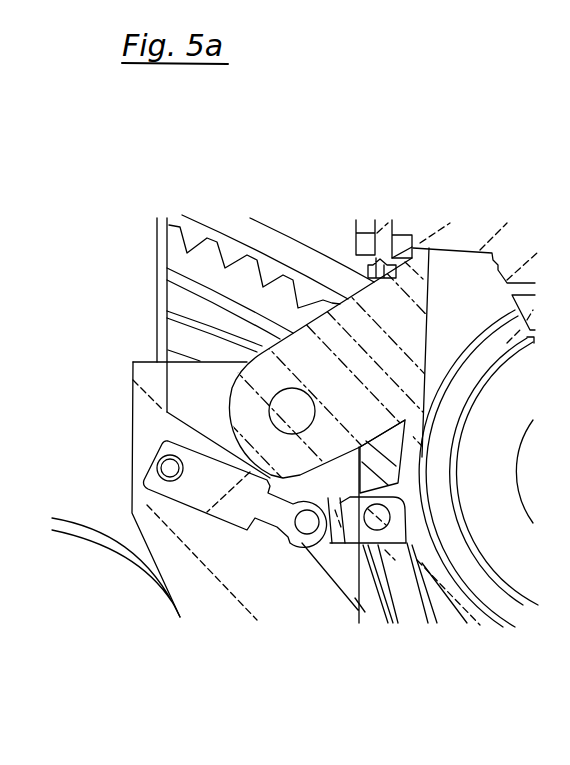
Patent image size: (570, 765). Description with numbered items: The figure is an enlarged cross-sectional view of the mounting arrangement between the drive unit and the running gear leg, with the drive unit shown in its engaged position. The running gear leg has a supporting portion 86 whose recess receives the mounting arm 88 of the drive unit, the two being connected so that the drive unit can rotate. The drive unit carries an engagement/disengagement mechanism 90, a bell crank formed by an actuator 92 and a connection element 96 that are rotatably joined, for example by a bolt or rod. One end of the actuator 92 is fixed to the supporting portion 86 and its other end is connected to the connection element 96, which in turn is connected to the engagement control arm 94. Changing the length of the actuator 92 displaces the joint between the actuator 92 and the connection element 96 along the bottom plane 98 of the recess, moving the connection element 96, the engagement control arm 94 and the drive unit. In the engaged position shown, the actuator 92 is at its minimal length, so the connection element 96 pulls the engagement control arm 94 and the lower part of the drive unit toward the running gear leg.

The supporting portion 86 is at (292, 610).
The mounting arm 88 is at (366, 384).
The engagement/disengagement mechanism 90 is at (363, 606).
The actuator 92 is at (219, 499).
The engagement control arm 94 is at (420, 529).
The connection element 96 is at (312, 496).
The bottom plane 98 is at (177, 427).